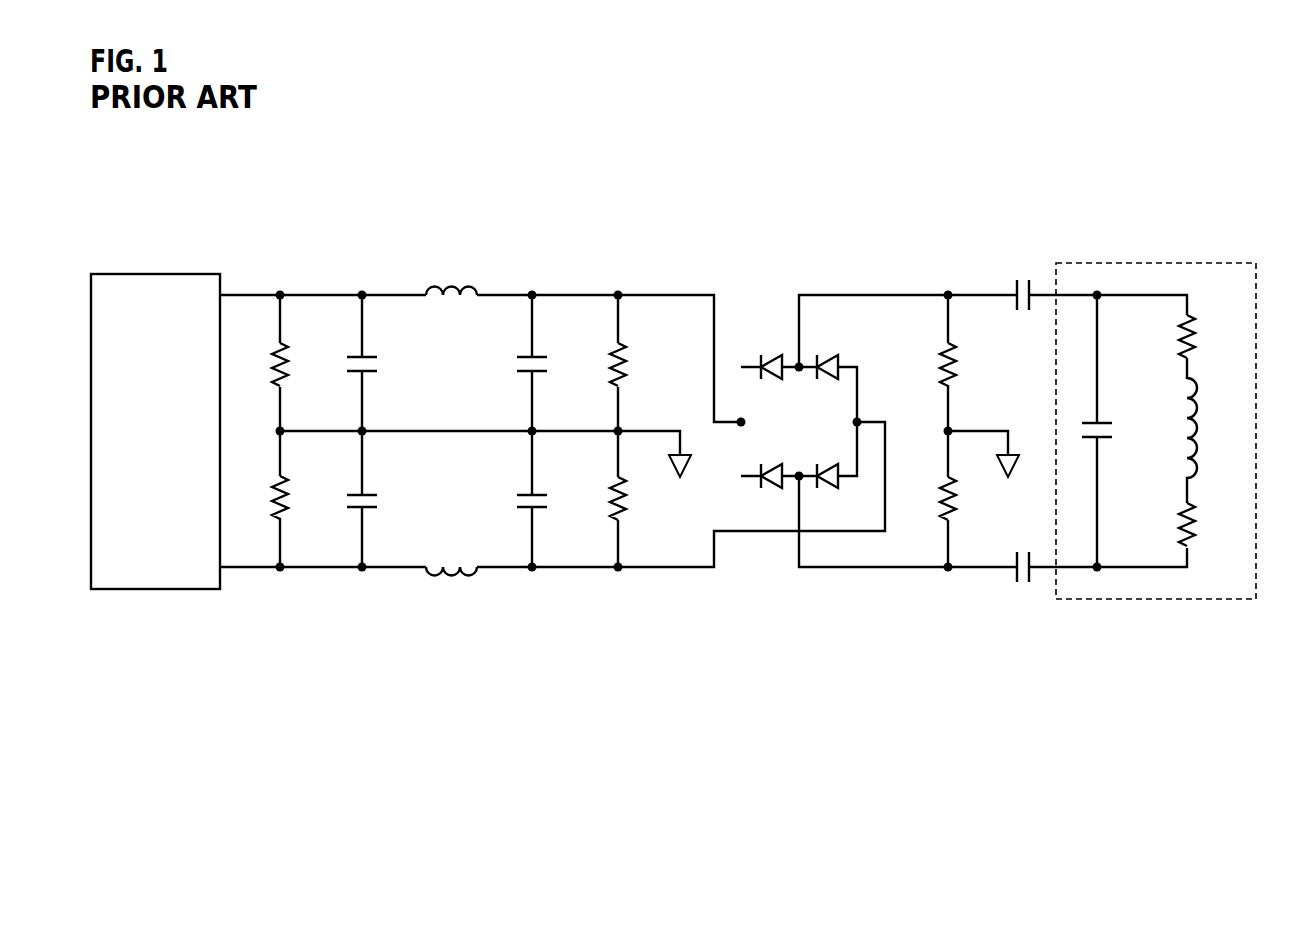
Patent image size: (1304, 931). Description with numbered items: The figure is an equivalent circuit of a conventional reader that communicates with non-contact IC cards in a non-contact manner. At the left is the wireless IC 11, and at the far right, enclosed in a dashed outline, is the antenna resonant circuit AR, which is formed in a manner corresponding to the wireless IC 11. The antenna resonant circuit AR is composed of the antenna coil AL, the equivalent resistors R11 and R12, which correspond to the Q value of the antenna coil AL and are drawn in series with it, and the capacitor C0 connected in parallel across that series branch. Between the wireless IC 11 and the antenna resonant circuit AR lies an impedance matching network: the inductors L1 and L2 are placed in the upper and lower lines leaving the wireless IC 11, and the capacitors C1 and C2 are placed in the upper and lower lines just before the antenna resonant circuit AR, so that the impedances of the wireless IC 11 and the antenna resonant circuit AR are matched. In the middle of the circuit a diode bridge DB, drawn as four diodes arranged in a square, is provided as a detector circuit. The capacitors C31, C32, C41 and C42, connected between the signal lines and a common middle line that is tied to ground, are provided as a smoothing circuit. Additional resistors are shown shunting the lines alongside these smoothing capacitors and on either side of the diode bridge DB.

The wireless IC 11 is at (154, 274).
The inductor L1 is at (451, 273).
The inductor L2 is at (451, 592).
The capacitor C41 is at (383, 363).
The capacitor C42 is at (383, 499).
The capacitor C31 is at (509, 363).
The capacitor C32 is at (509, 499).
The diode bridge DB is at (788, 433).
The capacitor C1 is at (1022, 281).
The capacitor C2 is at (1022, 587).
The antenna resonant circuit AR is at (1157, 263).
The capacitor C0 is at (1113, 431).
The equivalent resistor R11 is at (1206, 336).
The antenna coil AL is at (1209, 430).
The equivalent resistor R12 is at (1206, 524).